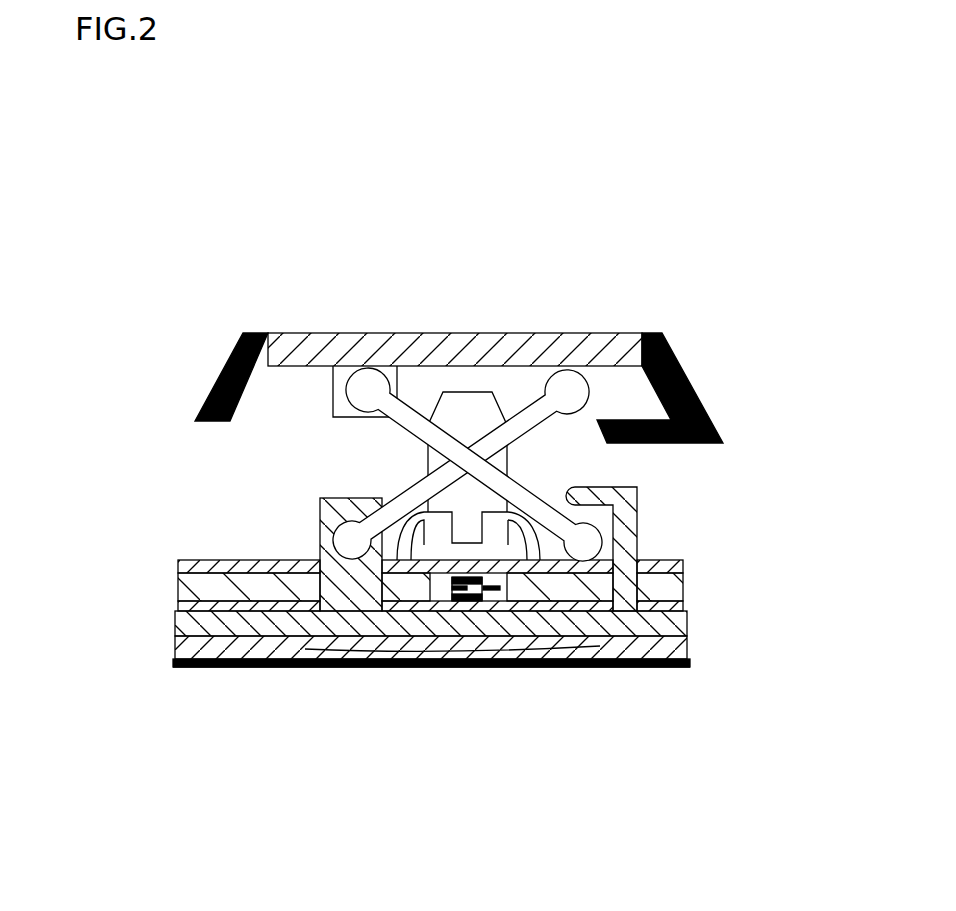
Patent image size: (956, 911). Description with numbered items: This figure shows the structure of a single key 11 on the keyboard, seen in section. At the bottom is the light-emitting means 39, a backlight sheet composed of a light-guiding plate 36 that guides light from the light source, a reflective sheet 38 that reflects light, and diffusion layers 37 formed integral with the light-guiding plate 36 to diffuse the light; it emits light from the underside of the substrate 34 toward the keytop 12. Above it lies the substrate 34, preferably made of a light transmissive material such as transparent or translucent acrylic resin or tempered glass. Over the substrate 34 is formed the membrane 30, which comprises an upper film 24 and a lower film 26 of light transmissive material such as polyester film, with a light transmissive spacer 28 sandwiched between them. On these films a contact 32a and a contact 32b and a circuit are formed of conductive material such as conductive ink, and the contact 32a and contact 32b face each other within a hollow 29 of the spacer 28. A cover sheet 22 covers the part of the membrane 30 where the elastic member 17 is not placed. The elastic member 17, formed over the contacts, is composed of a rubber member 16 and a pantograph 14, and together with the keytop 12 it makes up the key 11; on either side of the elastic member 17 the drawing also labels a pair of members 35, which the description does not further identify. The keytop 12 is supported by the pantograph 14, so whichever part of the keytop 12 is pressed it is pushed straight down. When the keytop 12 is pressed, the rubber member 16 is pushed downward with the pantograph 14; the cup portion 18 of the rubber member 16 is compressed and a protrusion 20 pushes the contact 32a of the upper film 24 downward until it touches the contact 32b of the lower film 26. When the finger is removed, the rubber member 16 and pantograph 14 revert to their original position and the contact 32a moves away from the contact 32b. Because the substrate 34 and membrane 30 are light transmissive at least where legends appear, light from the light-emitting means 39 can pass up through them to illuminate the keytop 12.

The key 11 is at (461, 507).
The keytop 12 is at (596, 350).
The pantograph 14 is at (413, 423).
The rubber member 16 is at (437, 467).
The elastic member 17 is at (316, 464).
The cup portion 18 is at (532, 542).
The protrusion 20 is at (472, 528).
The cover sheet 22 is at (467, 662).
The upper film 24 is at (683, 572).
The lower film 26 is at (683, 608).
The spacer 28 is at (683, 593).
The hollow 29 is at (568, 655).
The membrane 30 is at (535, 612).
The contact 32a is at (500, 593).
The contact 32b is at (481, 605).
The substrate 34 is at (167, 618).
The holder 35 is at (320, 510).
The light-guiding plate 36 is at (268, 668).
The diffusion layers 37 is at (460, 652).
The reflective sheet 38 is at (315, 667).
The light-emitting means 39 is at (416, 751).